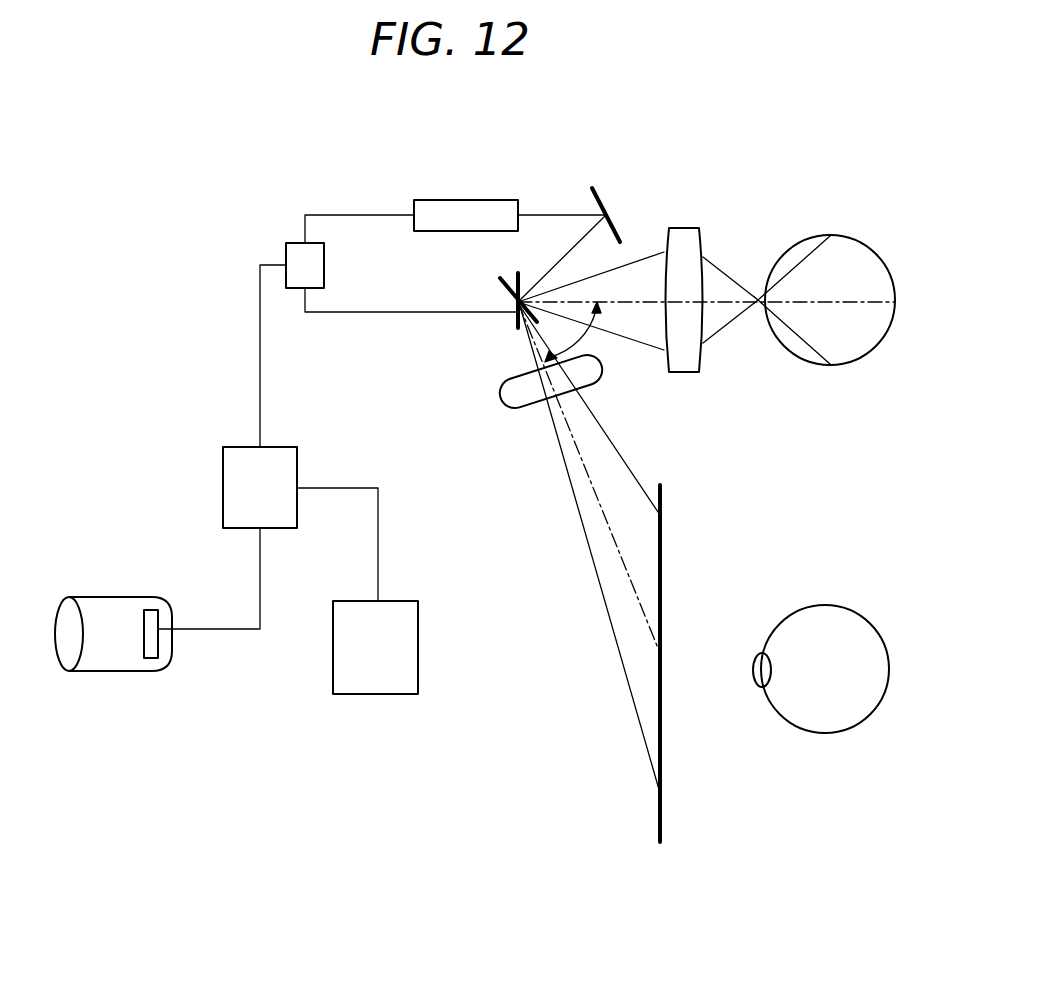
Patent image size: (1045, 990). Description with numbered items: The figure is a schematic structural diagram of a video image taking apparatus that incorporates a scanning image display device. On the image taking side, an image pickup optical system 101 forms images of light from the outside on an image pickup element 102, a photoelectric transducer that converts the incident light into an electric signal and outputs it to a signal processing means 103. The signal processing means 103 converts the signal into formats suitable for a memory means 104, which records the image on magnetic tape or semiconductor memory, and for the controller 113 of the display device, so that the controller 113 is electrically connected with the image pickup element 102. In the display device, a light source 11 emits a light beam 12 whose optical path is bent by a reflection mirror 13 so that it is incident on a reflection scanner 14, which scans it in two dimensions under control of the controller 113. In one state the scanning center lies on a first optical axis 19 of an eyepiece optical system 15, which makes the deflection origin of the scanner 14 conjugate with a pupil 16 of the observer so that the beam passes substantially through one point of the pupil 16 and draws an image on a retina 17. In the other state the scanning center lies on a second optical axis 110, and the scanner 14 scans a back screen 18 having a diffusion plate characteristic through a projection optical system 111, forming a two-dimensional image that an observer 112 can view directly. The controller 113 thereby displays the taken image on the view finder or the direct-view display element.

The light source 11 is at (466, 200).
The light beam 12 is at (545, 214).
The reflection mirror 13 is at (607, 216).
The reflection scanner 14 is at (510, 302).
The eyepiece optical system 15 is at (684, 228).
The pupil 16 is at (762, 308).
The retina 17 is at (852, 362).
The back screen 18 is at (662, 550).
The first optical axis 19 is at (640, 310).
The image pickup optical system 101 is at (115, 597).
The image pickup element 102 is at (163, 646).
The signal processing means 103 is at (223, 482).
The memory means 104 is at (383, 694).
The second optical axis 110 is at (598, 500).
The projection optical system 111 is at (506, 392).
The observer 112 is at (858, 726).
The controller 113 is at (286, 252).